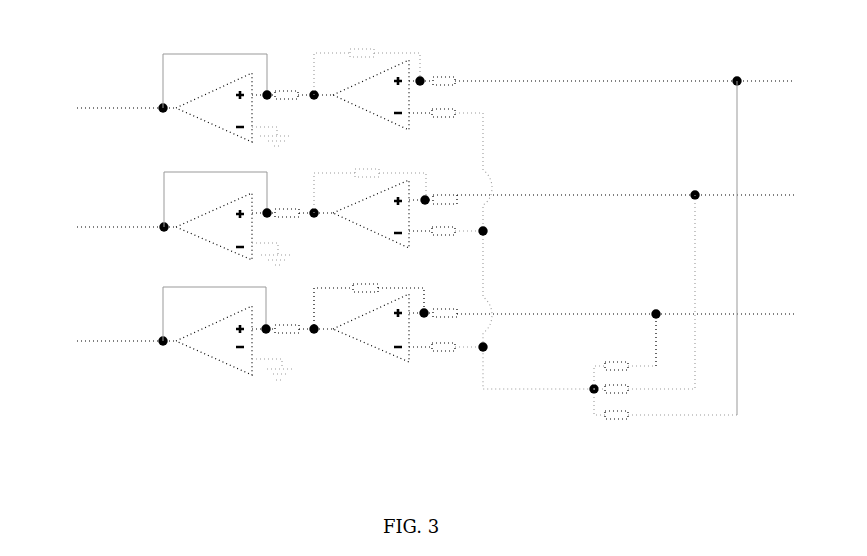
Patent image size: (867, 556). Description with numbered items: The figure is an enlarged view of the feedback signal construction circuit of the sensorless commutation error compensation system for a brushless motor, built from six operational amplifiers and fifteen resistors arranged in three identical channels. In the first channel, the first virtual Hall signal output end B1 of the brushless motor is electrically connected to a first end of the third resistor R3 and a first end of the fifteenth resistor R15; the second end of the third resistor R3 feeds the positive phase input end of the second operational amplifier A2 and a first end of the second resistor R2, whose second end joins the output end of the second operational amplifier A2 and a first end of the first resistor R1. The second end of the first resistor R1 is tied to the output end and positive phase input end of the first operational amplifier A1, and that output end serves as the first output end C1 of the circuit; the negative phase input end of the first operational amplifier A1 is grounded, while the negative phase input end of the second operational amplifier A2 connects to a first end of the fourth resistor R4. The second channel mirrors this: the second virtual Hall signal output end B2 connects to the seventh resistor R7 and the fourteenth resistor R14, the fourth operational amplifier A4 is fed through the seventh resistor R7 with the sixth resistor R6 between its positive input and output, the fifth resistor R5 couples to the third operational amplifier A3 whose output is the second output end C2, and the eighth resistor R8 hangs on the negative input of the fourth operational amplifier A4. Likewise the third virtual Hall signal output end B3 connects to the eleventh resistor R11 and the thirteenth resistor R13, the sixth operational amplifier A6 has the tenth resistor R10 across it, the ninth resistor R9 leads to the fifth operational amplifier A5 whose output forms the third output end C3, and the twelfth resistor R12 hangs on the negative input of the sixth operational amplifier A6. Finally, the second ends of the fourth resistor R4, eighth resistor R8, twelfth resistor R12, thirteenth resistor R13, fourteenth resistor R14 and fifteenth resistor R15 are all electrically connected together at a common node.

The first output end C1 is at (108, 107).
The second output end C2 is at (109, 220).
The third output end C3 is at (108, 340).
The first operational amplifier A1 is at (214, 112).
The second operational amplifier A2 is at (371, 99).
The third operational amplifier A3 is at (214, 230).
The fourth operational amplifier A4 is at (371, 220).
The fifth operational amplifier A5 is at (214, 342).
The sixth operational amplifier A6 is at (371, 333).
The first resistor R1 is at (286, 81).
The second resistor R2 is at (361, 39).
The third resistor R3 is at (446, 70).
The fourth resistor R4 is at (445, 124).
The fifth resistor R5 is at (288, 203).
The sixth resistor R6 is at (366, 162).
The seventh resistor R7 is at (446, 189).
The eighth resistor R8 is at (446, 244).
The ninth resistor R9 is at (288, 318).
The tenth resistor R10 is at (370, 278).
The eleventh resistor R11 is at (452, 303).
The twelfth resistor R12 is at (452, 359).
The thirteenth resistor R13 is at (627, 353).
The fourteenth resistor R14 is at (636, 380).
The fifteenth resistor R15 is at (624, 426).
The first virtual Hall signal output end B1 is at (641, 83).
The second virtual Hall signal output end B2 is at (642, 197).
The third virtual Hall signal output end B3 is at (643, 315).